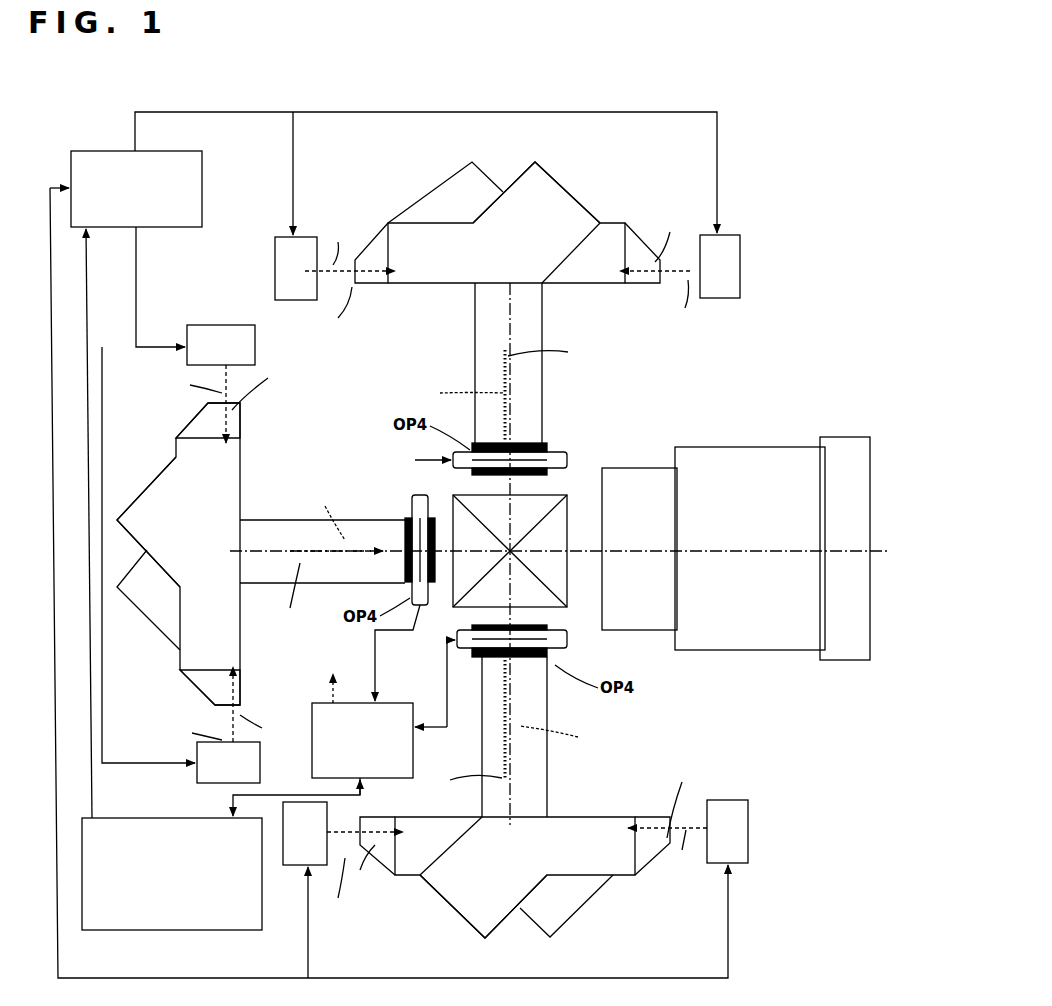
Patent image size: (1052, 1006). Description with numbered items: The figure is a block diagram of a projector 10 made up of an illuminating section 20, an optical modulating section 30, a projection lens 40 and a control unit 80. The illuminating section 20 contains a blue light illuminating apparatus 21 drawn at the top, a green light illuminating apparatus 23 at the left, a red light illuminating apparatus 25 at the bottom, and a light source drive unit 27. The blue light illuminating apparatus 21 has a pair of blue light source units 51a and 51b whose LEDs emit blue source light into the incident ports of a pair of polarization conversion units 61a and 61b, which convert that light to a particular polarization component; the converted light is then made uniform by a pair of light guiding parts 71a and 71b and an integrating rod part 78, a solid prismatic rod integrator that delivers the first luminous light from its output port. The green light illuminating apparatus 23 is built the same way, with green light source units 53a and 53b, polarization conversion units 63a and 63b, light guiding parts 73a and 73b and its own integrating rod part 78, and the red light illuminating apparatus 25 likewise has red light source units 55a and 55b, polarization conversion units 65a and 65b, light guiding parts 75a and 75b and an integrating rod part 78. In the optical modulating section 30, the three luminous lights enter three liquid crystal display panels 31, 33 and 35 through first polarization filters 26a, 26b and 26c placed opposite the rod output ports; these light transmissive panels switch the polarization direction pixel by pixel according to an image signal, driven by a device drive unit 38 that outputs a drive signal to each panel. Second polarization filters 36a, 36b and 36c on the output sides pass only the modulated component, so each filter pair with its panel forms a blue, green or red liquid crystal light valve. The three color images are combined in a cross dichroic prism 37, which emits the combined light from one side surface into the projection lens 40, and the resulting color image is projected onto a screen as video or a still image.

The projector 10 is at (835, 69).
The illuminating section 20 is at (403, 196).
The blue light illuminating apparatus 21 is at (582, 174).
The green light illuminating apparatus 23 is at (160, 443).
The red light illuminating apparatus 25 is at (446, 918).
The first polarization filter 26a is at (568, 440).
The first polarization filter 26b is at (400, 578).
The first polarization filter 26c is at (545, 660).
The light source drive unit 27 is at (150, 199).
The optical modulating section 30 is at (640, 403).
The liquid crystal display panel 31 is at (565, 458).
The liquid crystal display panel 33 is at (412, 505).
The liquid crystal display panel 35 is at (560, 645).
The second polarization filter 36a is at (560, 447).
The second polarization filter 36b is at (433, 603).
The second polarization filter 36c is at (560, 632).
The cross dichroic prism 37 is at (568, 497).
The device drive unit 38 is at (375, 750).
The projection lens 40 is at (733, 651).
The blue light source unit 51a is at (285, 232).
The blue light source unit 51b is at (727, 233).
The green light source unit 53a is at (197, 775).
The green light source unit 53b is at (233, 325).
The red light source unit 55a is at (712, 865).
The red light source unit 55b is at (292, 865).
The polarization conversion unit 61a is at (383, 288).
The polarization conversion unit 61b is at (648, 288).
The polarization conversion unit 63a is at (242, 680).
The polarization conversion unit 63b is at (242, 420).
The polarization conversion unit 65a is at (647, 818).
The polarization conversion unit 65b is at (385, 875).
The light guiding part 71a is at (536, 164).
The light guiding part 71b is at (470, 163).
The light guiding part 73a is at (160, 490).
The light guiding part 73b is at (152, 612).
The light guiding part 75a is at (485, 925).
The light guiding part 75b is at (553, 922).
The integrating rod part 78 is at (474, 361).
The control unit 80 is at (185, 883).